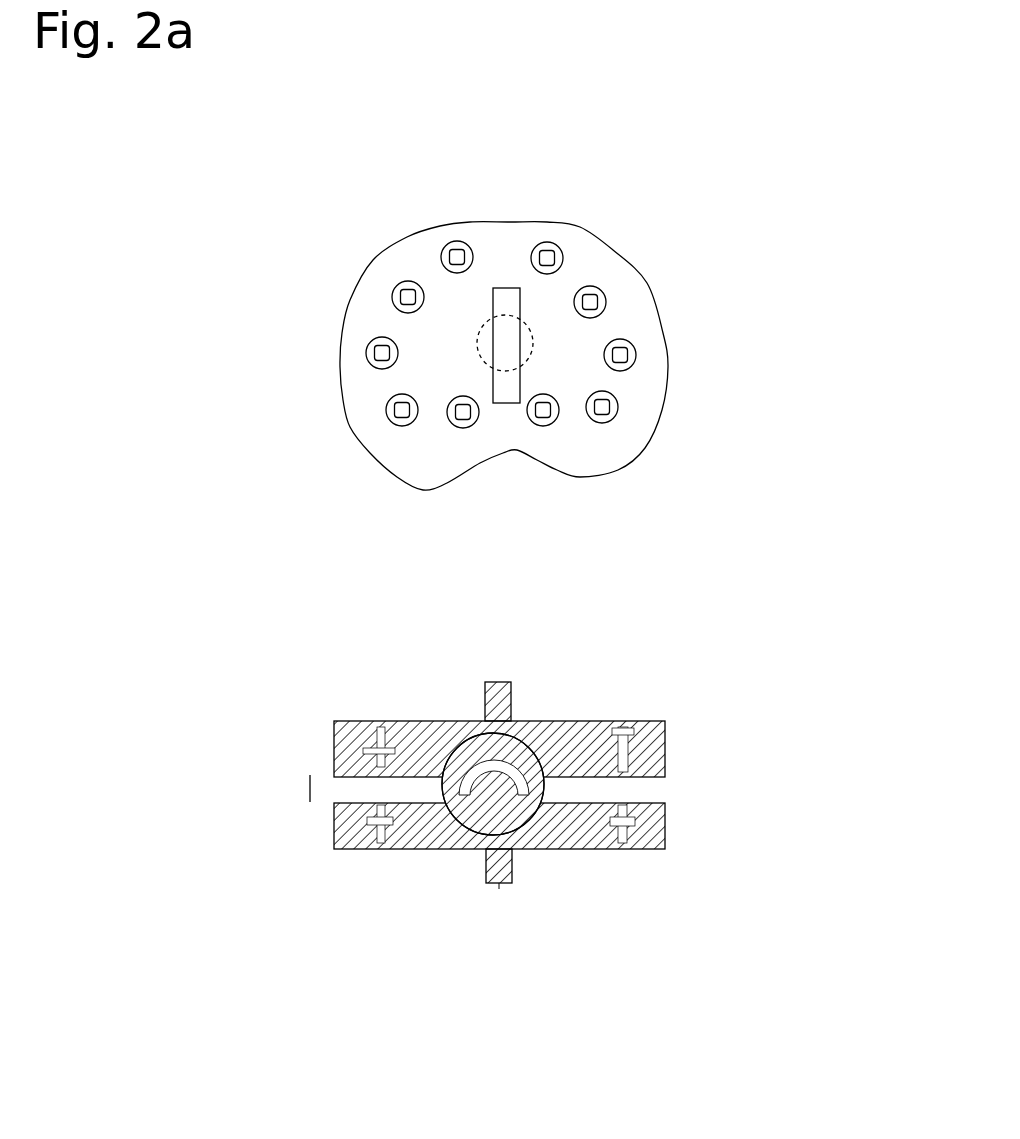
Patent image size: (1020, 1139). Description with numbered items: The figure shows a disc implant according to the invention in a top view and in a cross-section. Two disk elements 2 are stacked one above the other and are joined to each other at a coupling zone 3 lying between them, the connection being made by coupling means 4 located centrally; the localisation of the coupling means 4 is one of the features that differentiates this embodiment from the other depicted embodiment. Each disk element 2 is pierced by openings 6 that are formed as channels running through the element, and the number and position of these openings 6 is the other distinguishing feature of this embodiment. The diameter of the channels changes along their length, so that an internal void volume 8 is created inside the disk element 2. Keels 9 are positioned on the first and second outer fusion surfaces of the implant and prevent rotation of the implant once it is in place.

The disk element 2 is at (680, 752).
The coupling zone 3 is at (302, 787).
The coupling means 4 is at (547, 847).
The openings 6 is at (402, 297).
The internal void volume 8 is at (380, 767).
The keels 9 is at (505, 273).